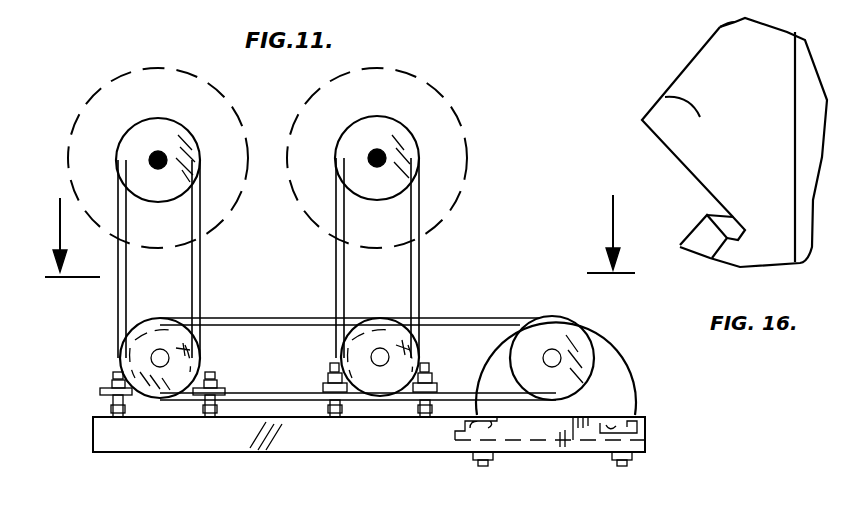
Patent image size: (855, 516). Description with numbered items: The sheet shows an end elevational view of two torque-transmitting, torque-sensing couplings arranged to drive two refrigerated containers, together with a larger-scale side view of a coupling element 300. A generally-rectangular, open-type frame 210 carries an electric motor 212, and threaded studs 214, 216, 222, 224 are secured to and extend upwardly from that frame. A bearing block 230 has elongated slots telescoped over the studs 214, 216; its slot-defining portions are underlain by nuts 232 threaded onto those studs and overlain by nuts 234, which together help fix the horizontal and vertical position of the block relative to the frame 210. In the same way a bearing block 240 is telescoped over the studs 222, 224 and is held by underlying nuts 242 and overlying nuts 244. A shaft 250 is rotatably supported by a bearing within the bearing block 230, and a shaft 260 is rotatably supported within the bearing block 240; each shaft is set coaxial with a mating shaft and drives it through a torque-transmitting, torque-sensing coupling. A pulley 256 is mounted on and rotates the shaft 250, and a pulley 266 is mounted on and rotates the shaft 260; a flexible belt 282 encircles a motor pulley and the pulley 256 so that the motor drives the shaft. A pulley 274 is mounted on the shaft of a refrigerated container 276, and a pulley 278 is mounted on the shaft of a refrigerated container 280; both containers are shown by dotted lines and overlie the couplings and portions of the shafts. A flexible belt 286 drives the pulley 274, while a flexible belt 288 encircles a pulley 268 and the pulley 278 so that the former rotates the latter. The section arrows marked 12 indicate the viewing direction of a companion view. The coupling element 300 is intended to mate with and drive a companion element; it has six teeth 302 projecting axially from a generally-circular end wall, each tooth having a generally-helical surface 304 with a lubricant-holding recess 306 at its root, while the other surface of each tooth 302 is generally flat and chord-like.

In FIG. 11, the section line 12 is at (333, 228).
In FIG. 11, the frame 210 is at (283, 453).
In FIG. 11, the electric motor 212 is at (632, 358).
In FIG. 11, the threaded stud 214 is at (93, 440).
In FIG. 11, the threaded stud 216 is at (194, 422).
In FIG. 11, the threaded stud 222 is at (340, 418).
In FIG. 11, the threaded stud 224 is at (393, 453).
In FIG. 11, the bearing block 230 is at (135, 350).
In FIG. 11, the nuts 232 is at (105, 395).
In FIG. 11, the nuts 234 is at (110, 388).
In FIG. 11, the bearing block 240 is at (342, 350).
In FIG. 11, the nuts 242 is at (336, 417).
In FIG. 11, the nuts 244 is at (324, 385).
In FIG. 11, the shaft 250 is at (160, 350).
In FIG. 11, the pulley 256 is at (205, 350).
In FIG. 11, the shaft 260 is at (380, 350).
In FIG. 11, the pulley 266 is at (430, 335).
In FIG. 11, the pulley 268 is at (393, 512).
In FIG. 11, the pulley 274 is at (160, 124).
In FIG. 11, the refrigerated container 276 is at (148, 68).
In FIG. 11, the pulley 278 is at (383, 122).
In FIG. 11, the refrigerated container 280 is at (437, 85).
In FIG. 11, the flexible belt 282 is at (272, 318).
In FIG. 11, the flexible belt 286 is at (207, 245).
In FIG. 11, the flexible belt 288 is at (426, 245).
In FIG. 16, the coupling element 300 is at (776, 268).
In FIG. 16, the teeth 302 is at (663, 97).
In FIG. 16, the generally-helical surface 304 is at (692, 62).
In FIG. 16, the lubricant-holding recess 306 is at (720, 27).